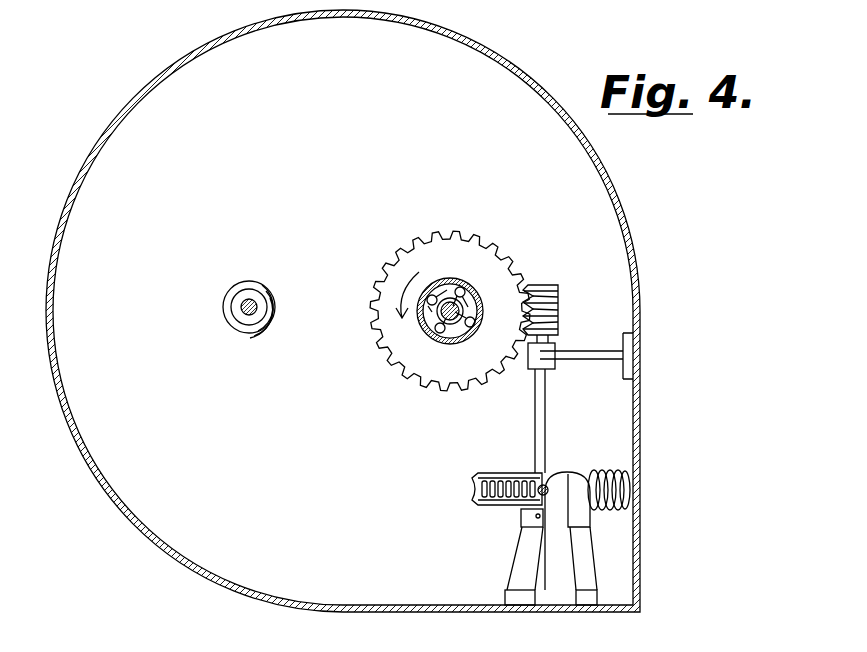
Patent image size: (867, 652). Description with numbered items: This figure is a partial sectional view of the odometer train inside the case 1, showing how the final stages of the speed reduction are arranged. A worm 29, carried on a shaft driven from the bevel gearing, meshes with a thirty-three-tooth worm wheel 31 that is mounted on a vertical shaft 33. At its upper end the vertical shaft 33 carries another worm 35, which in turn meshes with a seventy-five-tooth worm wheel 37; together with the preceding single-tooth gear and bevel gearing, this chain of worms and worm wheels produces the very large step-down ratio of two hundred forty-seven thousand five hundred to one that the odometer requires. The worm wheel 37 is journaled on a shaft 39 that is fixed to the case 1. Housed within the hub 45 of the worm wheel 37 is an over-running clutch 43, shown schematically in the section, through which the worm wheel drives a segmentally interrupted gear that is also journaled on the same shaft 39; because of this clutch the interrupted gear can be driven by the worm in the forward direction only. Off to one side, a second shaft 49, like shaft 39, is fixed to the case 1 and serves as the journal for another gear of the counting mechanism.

The case 1 is at (330, 11).
The worm 29 is at (620, 506).
The worm wheel 31 is at (511, 501).
The vertical shaft 33 is at (543, 441).
The worm 35 is at (561, 313).
The worm wheel 37 is at (515, 270).
The shaft 39 is at (460, 308).
The over-running clutch 43 is at (455, 333).
The hub 45 is at (471, 287).
The shaft 49 is at (249, 315).